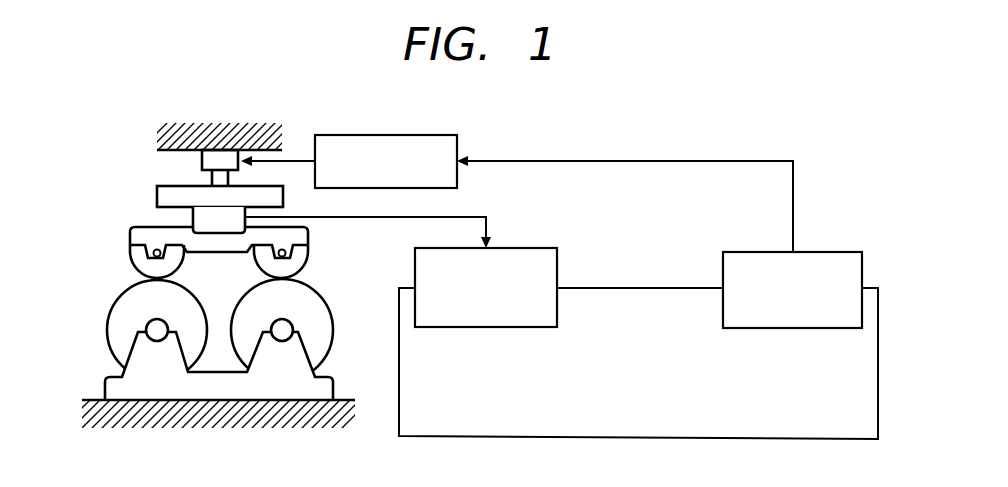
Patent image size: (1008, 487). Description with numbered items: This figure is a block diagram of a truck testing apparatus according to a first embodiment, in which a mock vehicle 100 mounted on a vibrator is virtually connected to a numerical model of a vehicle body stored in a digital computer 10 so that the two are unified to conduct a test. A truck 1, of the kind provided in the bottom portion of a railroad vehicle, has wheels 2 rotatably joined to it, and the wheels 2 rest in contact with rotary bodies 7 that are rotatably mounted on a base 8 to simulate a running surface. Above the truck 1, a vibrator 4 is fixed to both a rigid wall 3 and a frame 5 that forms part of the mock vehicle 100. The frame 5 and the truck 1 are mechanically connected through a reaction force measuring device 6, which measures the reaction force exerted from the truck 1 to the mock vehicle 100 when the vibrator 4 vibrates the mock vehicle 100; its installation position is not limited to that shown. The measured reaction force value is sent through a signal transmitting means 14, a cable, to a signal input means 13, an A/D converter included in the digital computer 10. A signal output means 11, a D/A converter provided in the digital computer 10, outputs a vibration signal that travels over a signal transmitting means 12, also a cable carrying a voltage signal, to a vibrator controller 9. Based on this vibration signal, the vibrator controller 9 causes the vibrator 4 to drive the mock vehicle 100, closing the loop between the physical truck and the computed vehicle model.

The truck 1 is at (131, 230).
The wheels 2 is at (131, 268).
The rigid wall 3 is at (238, 122).
The vibrator 4 is at (202, 160).
The frame 5 is at (157, 191).
The reaction force measuring device 6 is at (193, 219).
The rotary bodies 7 is at (108, 322).
The base 8 is at (140, 428).
The vibrator controller 9 is at (427, 135).
The digital computer 10 is at (650, 285).
The signal output means 11 is at (828, 252).
The signal transmitting means 12 is at (632, 162).
The signal input means 13 is at (528, 248).
The signal transmitting means 14 is at (445, 217).
The mock vehicle 100 is at (180, 178).